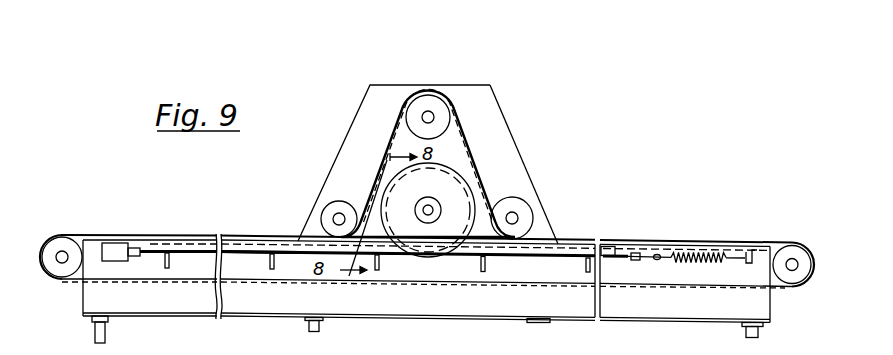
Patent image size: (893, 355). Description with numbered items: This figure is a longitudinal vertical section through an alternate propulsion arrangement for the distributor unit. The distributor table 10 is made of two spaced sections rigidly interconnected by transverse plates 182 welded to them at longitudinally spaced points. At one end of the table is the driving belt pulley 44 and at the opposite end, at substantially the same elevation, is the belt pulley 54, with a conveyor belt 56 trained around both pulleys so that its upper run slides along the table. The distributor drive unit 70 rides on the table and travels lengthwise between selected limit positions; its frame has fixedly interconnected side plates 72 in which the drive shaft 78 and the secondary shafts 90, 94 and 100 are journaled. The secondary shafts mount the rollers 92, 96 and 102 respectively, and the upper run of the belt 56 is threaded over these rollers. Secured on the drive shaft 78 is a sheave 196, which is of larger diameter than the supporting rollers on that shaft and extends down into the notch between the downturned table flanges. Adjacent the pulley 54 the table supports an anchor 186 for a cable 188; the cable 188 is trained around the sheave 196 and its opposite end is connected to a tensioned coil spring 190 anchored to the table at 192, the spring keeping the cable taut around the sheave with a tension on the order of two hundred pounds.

The distributor table 10 is at (691, 336).
The driving belt pulley 44 is at (792, 282).
The belt pulley 54 is at (60, 268).
The conveyor belt 56 is at (393, 137).
The distributor drive unit 70 is at (360, 96).
The side plates 72 is at (497, 120).
The drive shaft 78 is at (428, 215).
The secondary shaft 90 is at (333, 220).
The roller 92 is at (330, 207).
The secondary shaft 94 is at (516, 217).
The roller 96 is at (516, 200).
The secondary shaft 100 is at (430, 114).
The roller 102 is at (417, 103).
The transverse plates 182 is at (484, 264).
The anchor 186 is at (113, 252).
The cable 188 is at (244, 255).
The tensioned coil spring 190 is at (687, 250).
The spring anchor 192 is at (748, 250).
The sheave 196 is at (440, 183).